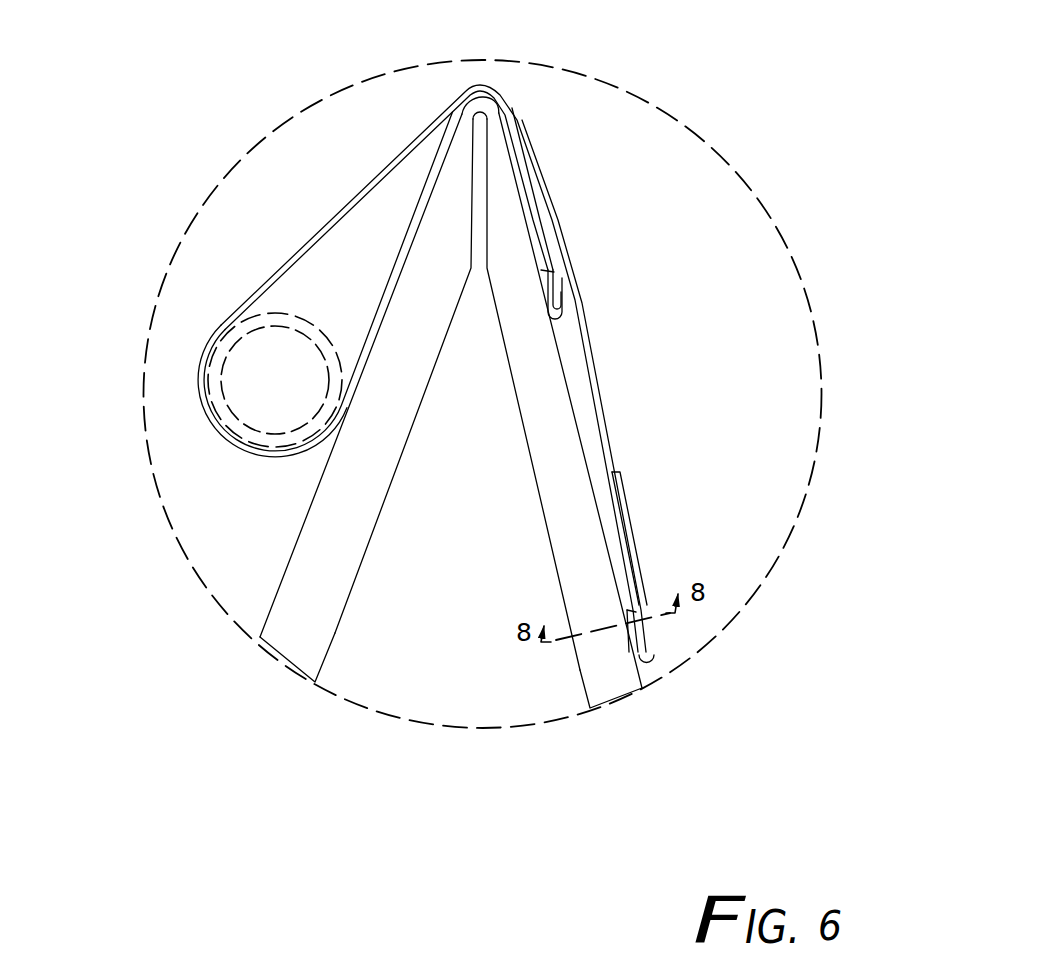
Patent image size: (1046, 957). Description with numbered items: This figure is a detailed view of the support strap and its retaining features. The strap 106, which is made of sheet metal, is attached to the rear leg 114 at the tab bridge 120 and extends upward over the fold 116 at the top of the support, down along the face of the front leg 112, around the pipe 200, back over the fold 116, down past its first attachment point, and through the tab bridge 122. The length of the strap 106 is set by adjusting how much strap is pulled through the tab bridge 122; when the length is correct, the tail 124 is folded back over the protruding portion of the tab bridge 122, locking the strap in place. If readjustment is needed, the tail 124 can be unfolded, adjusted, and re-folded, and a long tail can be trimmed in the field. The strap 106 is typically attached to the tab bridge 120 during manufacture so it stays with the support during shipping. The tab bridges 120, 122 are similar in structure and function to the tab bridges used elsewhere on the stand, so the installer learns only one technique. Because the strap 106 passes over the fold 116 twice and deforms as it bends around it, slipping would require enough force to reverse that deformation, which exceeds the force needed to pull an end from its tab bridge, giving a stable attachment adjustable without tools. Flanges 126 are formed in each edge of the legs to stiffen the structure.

The strap 106 is at (341, 205).
The front leg 112 is at (295, 640).
The rear leg 114 is at (602, 678).
The fold 116 is at (496, 89).
The tab bridge 120 is at (551, 269).
The tab bridge 122 is at (657, 656).
The tail 124 is at (625, 510).
The flanges 126 is at (335, 637).
The pipe 200 is at (212, 339).